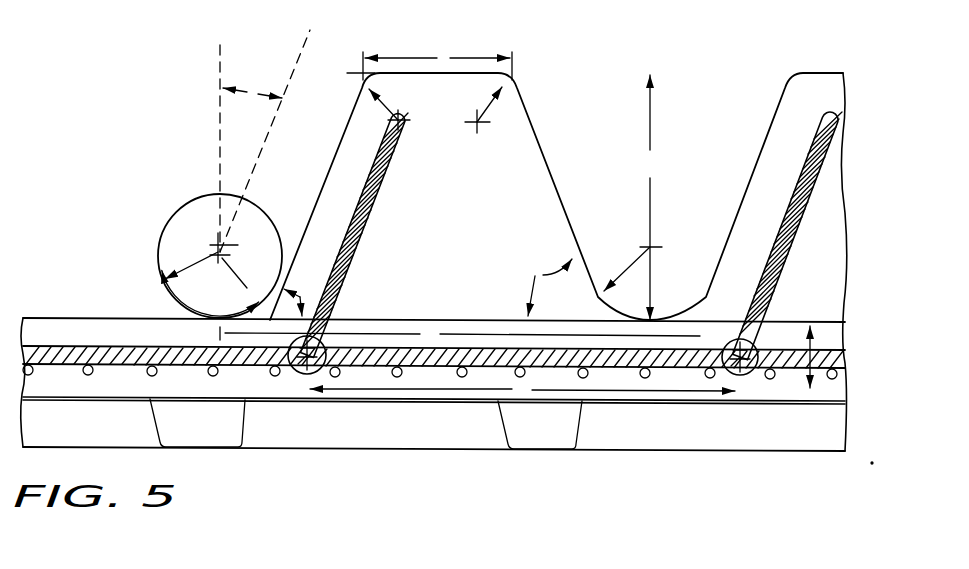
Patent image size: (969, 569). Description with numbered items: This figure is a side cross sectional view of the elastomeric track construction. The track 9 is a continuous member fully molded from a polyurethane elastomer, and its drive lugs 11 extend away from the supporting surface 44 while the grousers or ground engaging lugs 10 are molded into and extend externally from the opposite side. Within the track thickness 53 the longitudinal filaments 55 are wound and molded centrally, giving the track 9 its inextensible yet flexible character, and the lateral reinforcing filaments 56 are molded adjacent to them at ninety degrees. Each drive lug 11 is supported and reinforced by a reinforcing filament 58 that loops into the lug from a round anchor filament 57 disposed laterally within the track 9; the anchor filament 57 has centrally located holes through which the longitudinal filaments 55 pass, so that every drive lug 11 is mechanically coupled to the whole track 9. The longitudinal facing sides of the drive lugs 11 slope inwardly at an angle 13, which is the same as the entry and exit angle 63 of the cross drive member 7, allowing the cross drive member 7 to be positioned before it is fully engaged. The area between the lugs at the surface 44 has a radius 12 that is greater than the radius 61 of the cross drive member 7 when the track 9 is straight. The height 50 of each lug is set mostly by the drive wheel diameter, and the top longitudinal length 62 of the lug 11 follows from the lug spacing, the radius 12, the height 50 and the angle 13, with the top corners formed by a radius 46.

The cross drive member 7 is at (200, 213).
The elastomeric track 9 is at (145, 333).
The ground engaging lugs 10 is at (540, 433).
The drive lug 11 is at (827, 92).
The radius 12 is at (185, 258).
The inwardly sloping angle 13 is at (300, 297).
The supporting surface 44 is at (80, 318).
The radius 46 is at (470, 105).
The height 50 is at (654, 163).
The track thickness 53 is at (810, 343).
The longitudinal filaments 55 is at (96, 350).
The lateral reinforcing filaments 56 is at (86, 376).
The anchor filament 57 is at (300, 375).
The reinforcing filament 58 is at (372, 194).
The radius 61 is at (242, 284).
The longitudinal length 62 is at (443, 58).
The entry and exit angle 63 is at (249, 92).